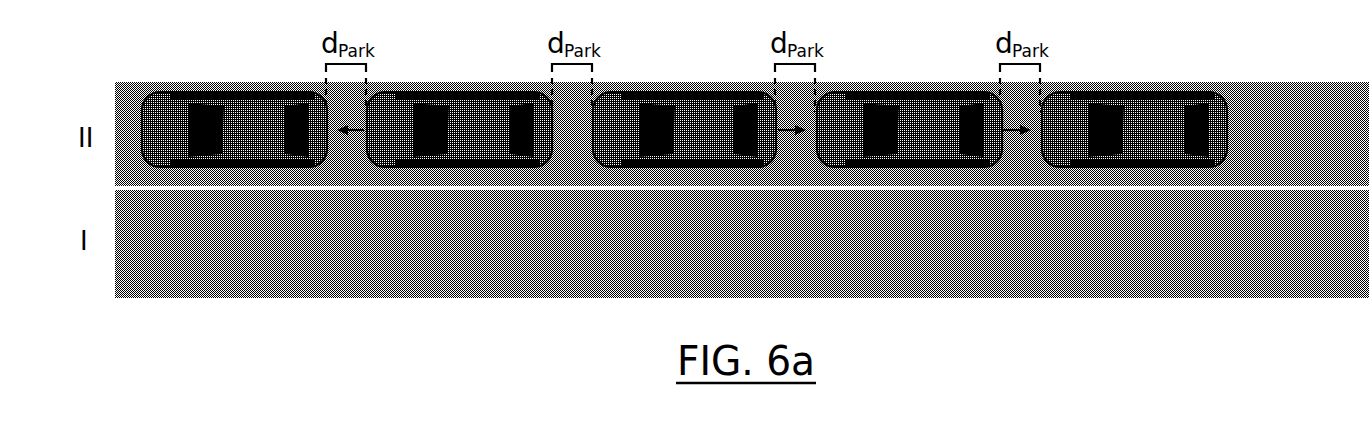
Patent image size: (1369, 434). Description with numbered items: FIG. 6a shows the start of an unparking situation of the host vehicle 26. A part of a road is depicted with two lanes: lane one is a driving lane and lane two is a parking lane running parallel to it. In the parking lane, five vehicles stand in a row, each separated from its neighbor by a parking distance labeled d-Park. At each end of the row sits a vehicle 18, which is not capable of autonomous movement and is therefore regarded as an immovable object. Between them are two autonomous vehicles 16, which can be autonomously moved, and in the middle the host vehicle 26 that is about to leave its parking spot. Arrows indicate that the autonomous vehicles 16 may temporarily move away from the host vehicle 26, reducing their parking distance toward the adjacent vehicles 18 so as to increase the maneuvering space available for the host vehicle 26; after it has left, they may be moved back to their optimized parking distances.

The autonomous vehicle 16 is at (475, 113).
The vehicle without autonomous capability 18 is at (243, 120).
The host vehicle 26 is at (710, 113).